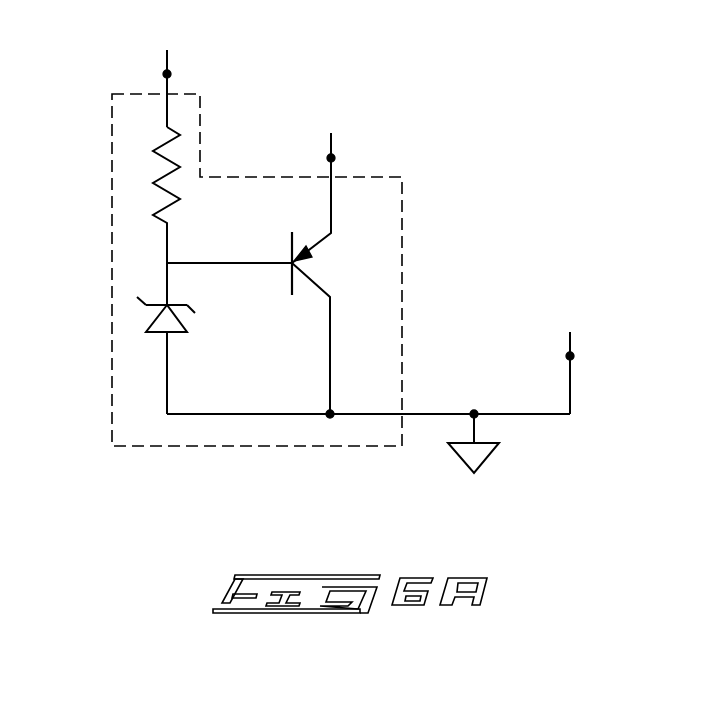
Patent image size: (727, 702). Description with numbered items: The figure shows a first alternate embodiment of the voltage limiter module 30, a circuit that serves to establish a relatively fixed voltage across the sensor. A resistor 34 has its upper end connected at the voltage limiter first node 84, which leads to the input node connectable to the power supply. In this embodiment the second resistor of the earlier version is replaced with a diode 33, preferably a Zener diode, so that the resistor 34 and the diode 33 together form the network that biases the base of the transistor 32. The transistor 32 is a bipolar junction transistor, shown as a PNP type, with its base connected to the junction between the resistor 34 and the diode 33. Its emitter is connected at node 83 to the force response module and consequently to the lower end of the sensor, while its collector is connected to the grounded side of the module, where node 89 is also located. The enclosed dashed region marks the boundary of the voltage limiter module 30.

The voltage limiter module 30 is at (187, 447).
The transistor 32 is at (335, 263).
The diode 33 is at (150, 321).
The resistor 34 is at (153, 185).
The node 83 is at (331, 158).
The voltage limiter first node 84 is at (167, 74).
The node 89 is at (570, 356).